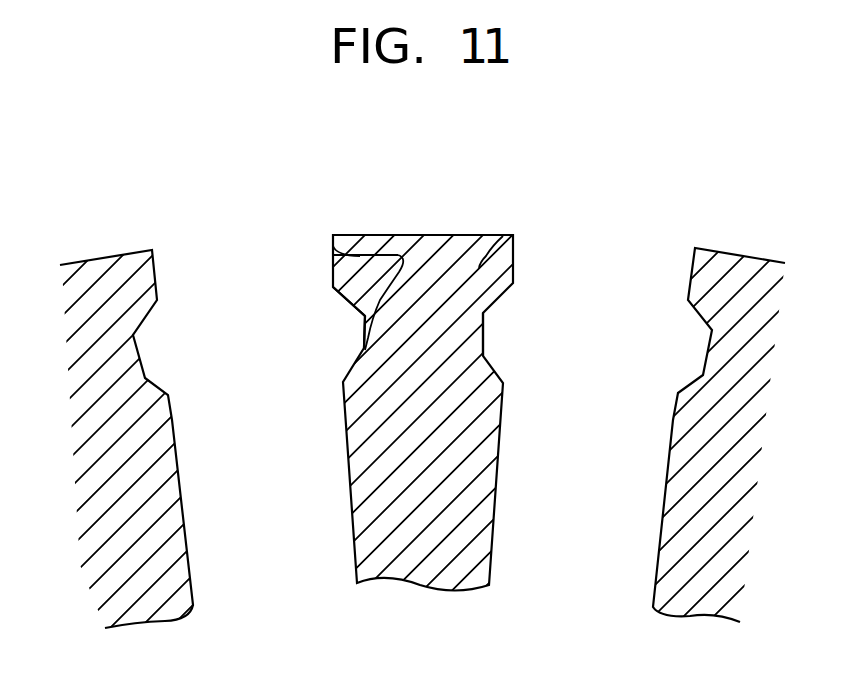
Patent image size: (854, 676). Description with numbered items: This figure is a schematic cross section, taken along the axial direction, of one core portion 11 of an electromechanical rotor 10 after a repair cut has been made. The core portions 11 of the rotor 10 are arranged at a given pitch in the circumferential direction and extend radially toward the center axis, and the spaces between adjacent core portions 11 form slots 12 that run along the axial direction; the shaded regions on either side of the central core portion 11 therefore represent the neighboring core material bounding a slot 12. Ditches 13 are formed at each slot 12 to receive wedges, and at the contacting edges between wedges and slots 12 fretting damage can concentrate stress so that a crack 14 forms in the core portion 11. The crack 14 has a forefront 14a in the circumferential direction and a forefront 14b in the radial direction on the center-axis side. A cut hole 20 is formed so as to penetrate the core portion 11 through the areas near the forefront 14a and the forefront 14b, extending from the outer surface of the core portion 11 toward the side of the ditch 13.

The electromechanical rotor 10 is at (184, 210).
The core portion 11 is at (502, 234).
The slot 12 is at (242, 297).
The ditch 13 is at (348, 339).
The crack 14 is at (360, 256).
The forefront of the crack in the circumferential direction 14a is at (405, 260).
The forefront of the crack in the radial direction 14b is at (362, 312).
The cut hole 20 is at (445, 250).